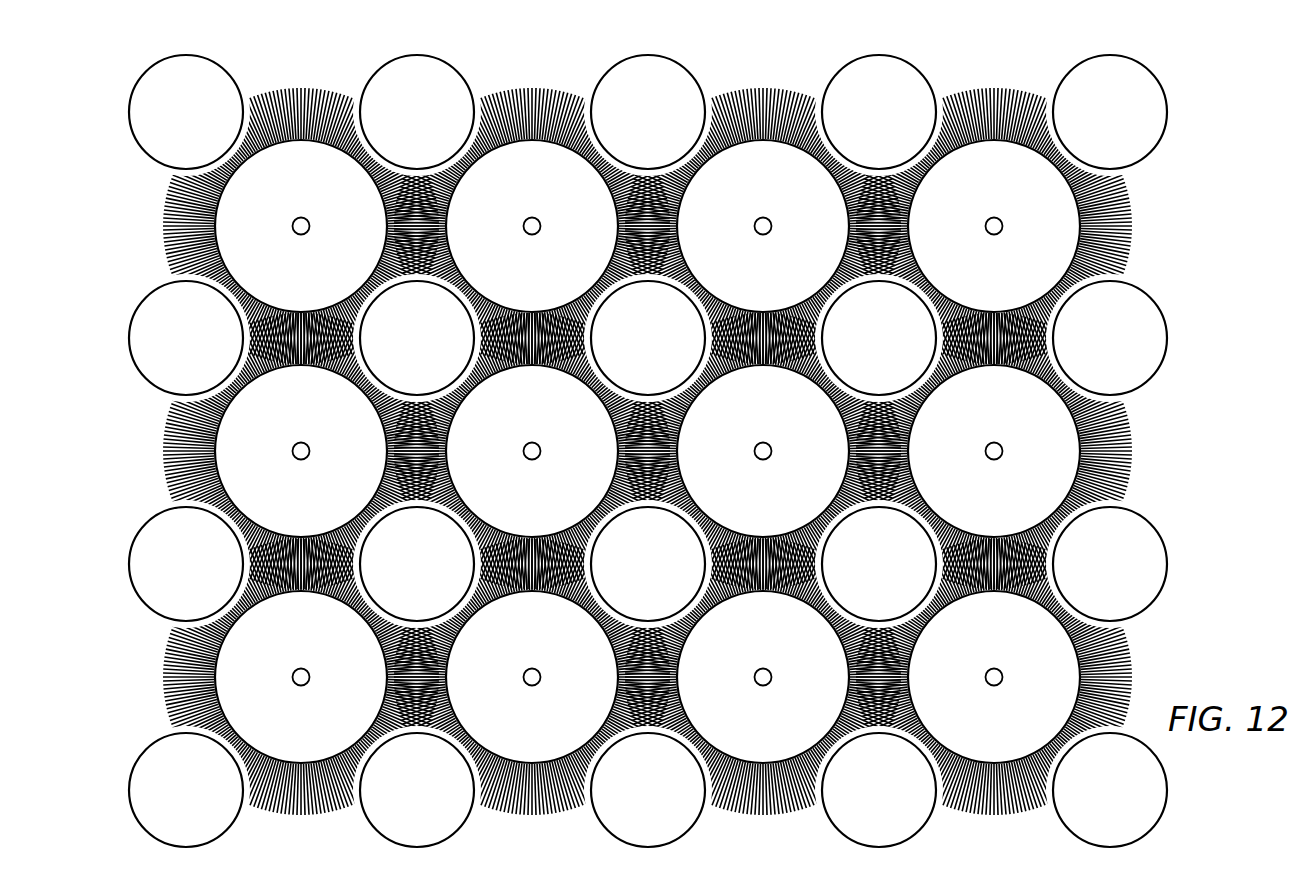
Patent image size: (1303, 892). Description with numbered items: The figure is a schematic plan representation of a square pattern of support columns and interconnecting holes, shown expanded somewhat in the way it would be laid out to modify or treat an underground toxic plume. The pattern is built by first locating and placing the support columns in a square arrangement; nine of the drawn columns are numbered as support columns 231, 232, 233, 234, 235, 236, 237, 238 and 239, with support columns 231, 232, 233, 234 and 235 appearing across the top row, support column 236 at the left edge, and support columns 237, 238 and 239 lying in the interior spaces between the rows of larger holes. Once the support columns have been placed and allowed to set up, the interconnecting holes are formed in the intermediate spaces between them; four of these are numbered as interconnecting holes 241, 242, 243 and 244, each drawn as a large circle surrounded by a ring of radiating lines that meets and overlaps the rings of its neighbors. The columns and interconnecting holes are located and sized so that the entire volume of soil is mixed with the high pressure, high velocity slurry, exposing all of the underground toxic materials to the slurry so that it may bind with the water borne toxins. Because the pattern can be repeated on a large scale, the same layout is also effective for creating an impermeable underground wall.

The support column 231 is at (162, 112).
The support column 232 is at (401, 108).
The support column 233 is at (632, 107).
The support column 234 is at (869, 105).
The support column 235 is at (1095, 107).
The support column 236 is at (162, 335).
The support column 237 is at (398, 351).
The support column 238 is at (629, 351).
The support column 239 is at (860, 351).
The interconnecting hole 241 is at (283, 190).
The interconnecting hole 242 is at (514, 190).
The interconnecting hole 243 is at (745, 190).
The interconnecting hole 244 is at (976, 190).